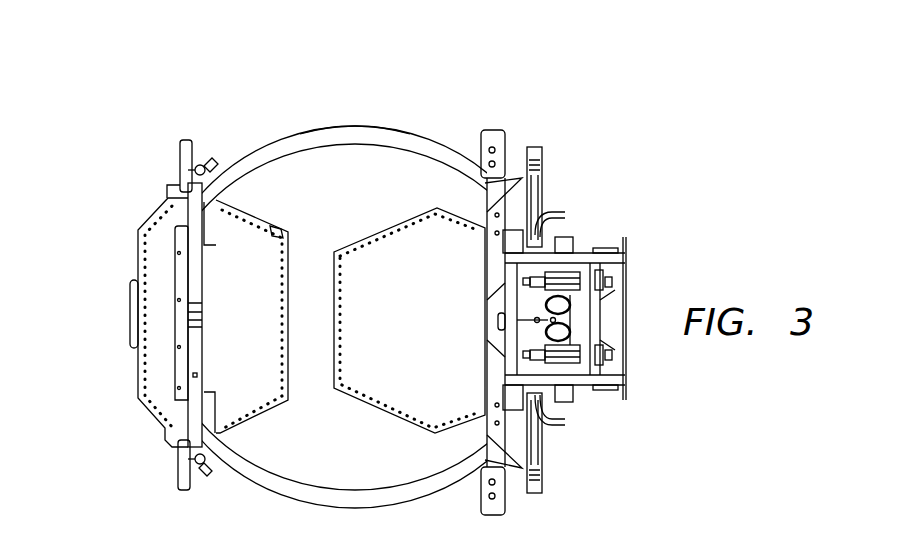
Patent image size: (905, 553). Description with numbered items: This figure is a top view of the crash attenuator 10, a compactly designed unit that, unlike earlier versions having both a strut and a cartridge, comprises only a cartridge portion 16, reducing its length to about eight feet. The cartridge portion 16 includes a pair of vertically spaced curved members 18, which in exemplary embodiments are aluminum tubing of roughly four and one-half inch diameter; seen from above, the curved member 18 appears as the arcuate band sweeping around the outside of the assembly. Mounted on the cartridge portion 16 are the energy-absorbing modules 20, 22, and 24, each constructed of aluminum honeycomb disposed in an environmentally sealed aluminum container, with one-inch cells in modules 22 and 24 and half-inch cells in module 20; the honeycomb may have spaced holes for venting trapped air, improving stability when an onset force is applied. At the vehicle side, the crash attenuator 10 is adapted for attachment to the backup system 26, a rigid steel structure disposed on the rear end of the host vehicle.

The crash attenuator 10 is at (133, 118).
The cartridge portion 16 is at (423, 122).
The curved members 18 is at (302, 130).
The energy-absorbing module 20 is at (153, 253).
The energy-absorbing module 22 is at (263, 257).
The energy-absorbing module 24 is at (423, 247).
The backup system 26 is at (532, 480).